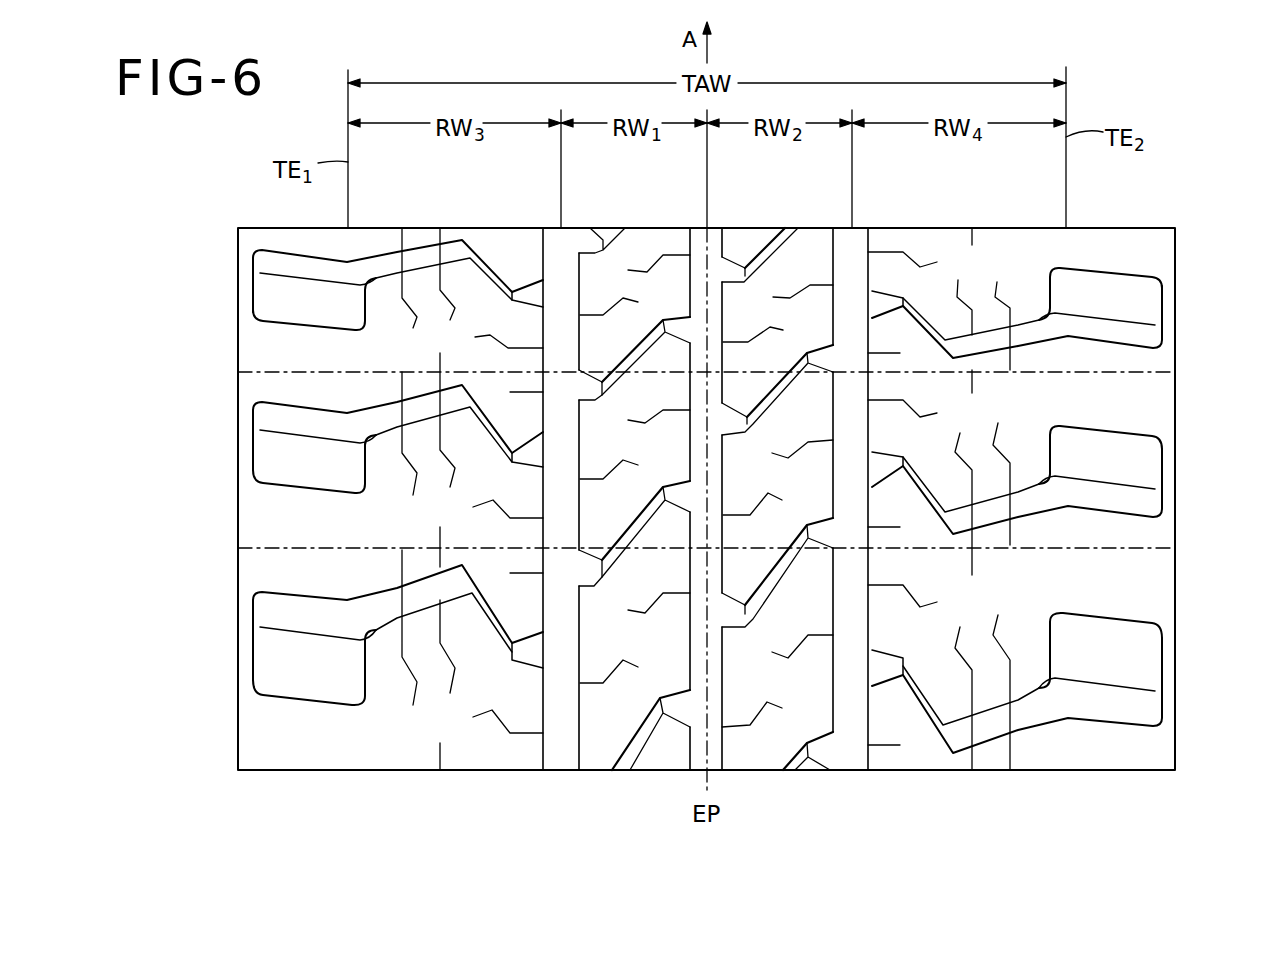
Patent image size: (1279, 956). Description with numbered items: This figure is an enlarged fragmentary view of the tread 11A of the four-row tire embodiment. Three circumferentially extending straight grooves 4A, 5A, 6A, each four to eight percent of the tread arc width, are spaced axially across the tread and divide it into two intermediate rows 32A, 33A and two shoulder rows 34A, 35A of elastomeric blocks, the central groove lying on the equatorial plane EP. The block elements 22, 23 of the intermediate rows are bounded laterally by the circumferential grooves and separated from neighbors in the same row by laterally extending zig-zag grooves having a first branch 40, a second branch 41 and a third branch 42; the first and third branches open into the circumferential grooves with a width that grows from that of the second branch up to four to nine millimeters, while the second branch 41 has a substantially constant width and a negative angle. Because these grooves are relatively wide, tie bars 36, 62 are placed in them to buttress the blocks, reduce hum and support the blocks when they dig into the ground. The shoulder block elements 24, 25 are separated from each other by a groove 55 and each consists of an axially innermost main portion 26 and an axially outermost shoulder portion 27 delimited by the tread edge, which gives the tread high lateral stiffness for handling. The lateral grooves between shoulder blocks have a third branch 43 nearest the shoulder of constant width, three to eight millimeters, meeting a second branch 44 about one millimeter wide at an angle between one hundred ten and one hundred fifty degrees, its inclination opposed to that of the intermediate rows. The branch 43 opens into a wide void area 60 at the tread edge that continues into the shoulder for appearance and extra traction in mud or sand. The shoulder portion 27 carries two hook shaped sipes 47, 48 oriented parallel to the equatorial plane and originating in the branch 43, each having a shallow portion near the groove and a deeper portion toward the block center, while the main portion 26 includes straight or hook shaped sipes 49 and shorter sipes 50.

The tread 11A is at (1193, 168).
The circumferentially extending straight groove 4A is at (559, 760).
The circumferentially extending straight groove 5A is at (712, 738).
The circumferentially extending straight groove 6A is at (852, 760).
The intermediate row 32A is at (621, 216).
The intermediate row 33A is at (764, 216).
The shoulder row 34A is at (442, 216).
The shoulder row 35A is at (937, 216).
The block element 22 is at (612, 500).
The block element 23 is at (743, 572).
The shoulder block element 24 is at (387, 520).
The shoulder block element 25 is at (940, 687).
The main portion 26 is at (905, 458).
The shoulder portion 27 is at (1035, 405).
The tie bar 36 is at (633, 753).
The first branch 40 is at (594, 385).
The second branch 41 is at (617, 376).
The third branch 42 is at (678, 327).
The third branch nearest to the shoulder 43 is at (987, 513).
The second branch 44 is at (915, 492).
The hook shaped sipe 47 is at (960, 281).
The hook shaped sipe 48 is at (1000, 293).
The sipe 49 is at (907, 402).
The shorter sipe 50 is at (888, 352).
The groove 55 is at (980, 728).
The wide void area 60 is at (1135, 297).
The tie bar 62 is at (770, 398).